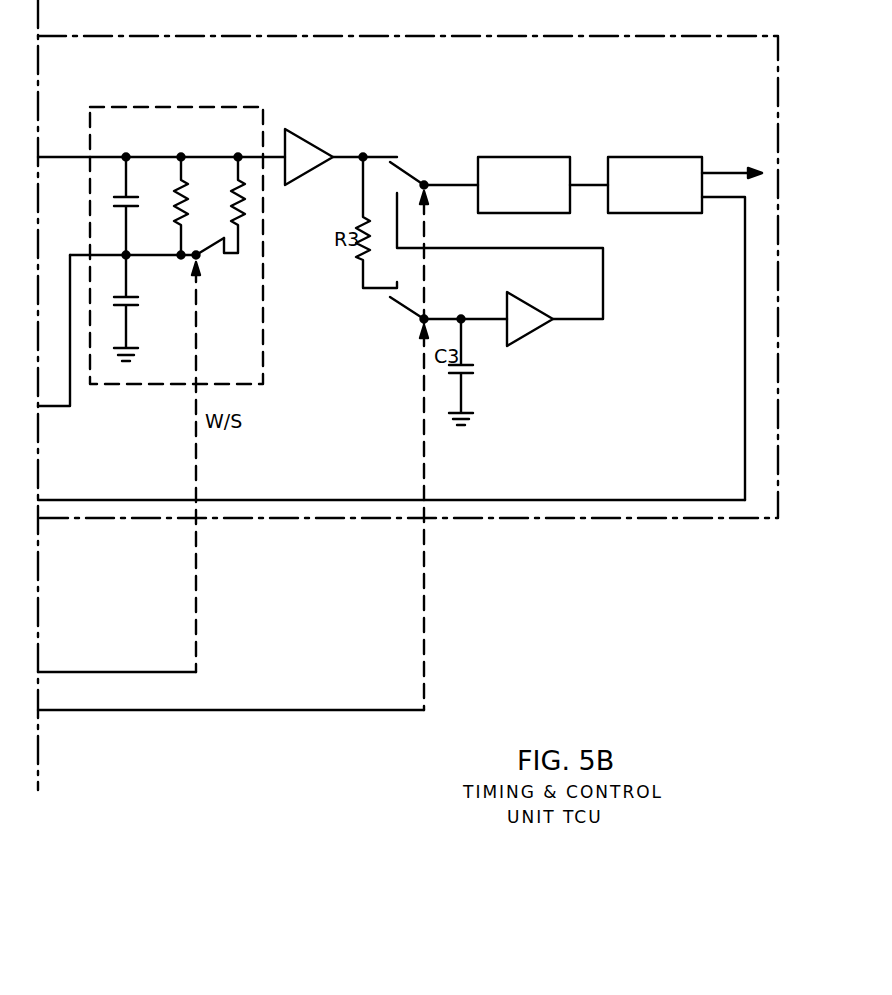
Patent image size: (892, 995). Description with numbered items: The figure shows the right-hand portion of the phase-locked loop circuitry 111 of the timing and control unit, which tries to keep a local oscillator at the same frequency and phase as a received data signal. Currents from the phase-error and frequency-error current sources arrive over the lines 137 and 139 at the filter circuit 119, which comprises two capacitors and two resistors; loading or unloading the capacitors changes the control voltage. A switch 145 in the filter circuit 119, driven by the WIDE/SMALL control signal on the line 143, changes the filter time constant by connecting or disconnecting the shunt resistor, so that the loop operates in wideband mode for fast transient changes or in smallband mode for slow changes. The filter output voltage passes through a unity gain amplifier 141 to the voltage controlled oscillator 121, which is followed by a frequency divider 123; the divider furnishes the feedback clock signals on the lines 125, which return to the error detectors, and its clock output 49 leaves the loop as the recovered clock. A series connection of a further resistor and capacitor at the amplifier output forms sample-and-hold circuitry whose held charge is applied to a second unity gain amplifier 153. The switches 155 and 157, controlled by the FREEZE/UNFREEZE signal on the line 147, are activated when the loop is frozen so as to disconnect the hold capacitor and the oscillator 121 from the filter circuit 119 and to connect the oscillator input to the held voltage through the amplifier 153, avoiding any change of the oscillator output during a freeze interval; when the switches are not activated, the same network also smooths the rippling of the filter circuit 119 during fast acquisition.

The phase-locked loop circuitry 111 is at (206, 36).
The filter circuit 119 is at (196, 107).
The line 137 is at (70, 157).
The line 139 is at (62, 406).
The unity gain amplifier 141 is at (310, 138).
The switch 145 is at (210, 258).
The switch 157 is at (412, 168).
The voltage controlled oscillator 121 is at (527, 157).
The frequency divider 123 is at (660, 157).
The clock output 49 is at (740, 172).
The switch 155 is at (404, 310).
The second unity gain amplifier 153 is at (530, 334).
The lines 125 is at (303, 500).
The line 143 is at (143, 672).
The line 147 is at (340, 710).